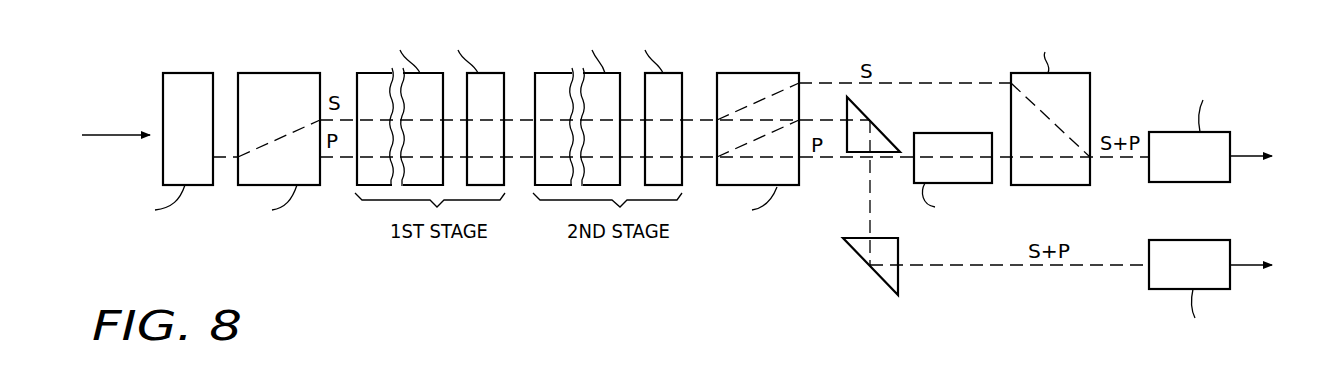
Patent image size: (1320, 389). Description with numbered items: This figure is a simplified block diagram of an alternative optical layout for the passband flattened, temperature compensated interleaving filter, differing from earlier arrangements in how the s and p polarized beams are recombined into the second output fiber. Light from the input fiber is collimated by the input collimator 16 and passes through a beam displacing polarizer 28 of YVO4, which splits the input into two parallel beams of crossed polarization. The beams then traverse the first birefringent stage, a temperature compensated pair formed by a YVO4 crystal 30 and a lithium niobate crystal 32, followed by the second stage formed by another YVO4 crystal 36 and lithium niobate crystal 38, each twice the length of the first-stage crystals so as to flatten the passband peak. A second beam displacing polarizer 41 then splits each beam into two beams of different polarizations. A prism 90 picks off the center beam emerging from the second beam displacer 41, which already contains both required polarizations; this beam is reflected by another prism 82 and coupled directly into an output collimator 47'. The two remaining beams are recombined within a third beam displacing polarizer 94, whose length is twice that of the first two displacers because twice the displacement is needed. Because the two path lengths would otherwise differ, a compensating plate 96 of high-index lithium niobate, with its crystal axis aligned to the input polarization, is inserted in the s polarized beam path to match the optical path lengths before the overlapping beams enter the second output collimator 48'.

The collimator 16 is at (185, 73).
The beam displacing polarizer 28 is at (276, 73).
The YVO4 crystal 30 is at (377, 73).
The lithium niobate crystal 32 is at (492, 73).
The YVO4 crystal 36 is at (560, 73).
The lithium niobate crystal 38 is at (680, 73).
The beam displacing polarizer 41 is at (757, 73).
The prism 90 is at (865, 112).
The compensating plate 96 is at (928, 133).
The third beam displacing polarizer 94 is at (1011, 108).
The output collimator 47' is at (1198, 115).
The prism 82 is at (885, 280).
The output collimator 48' is at (1189, 307).